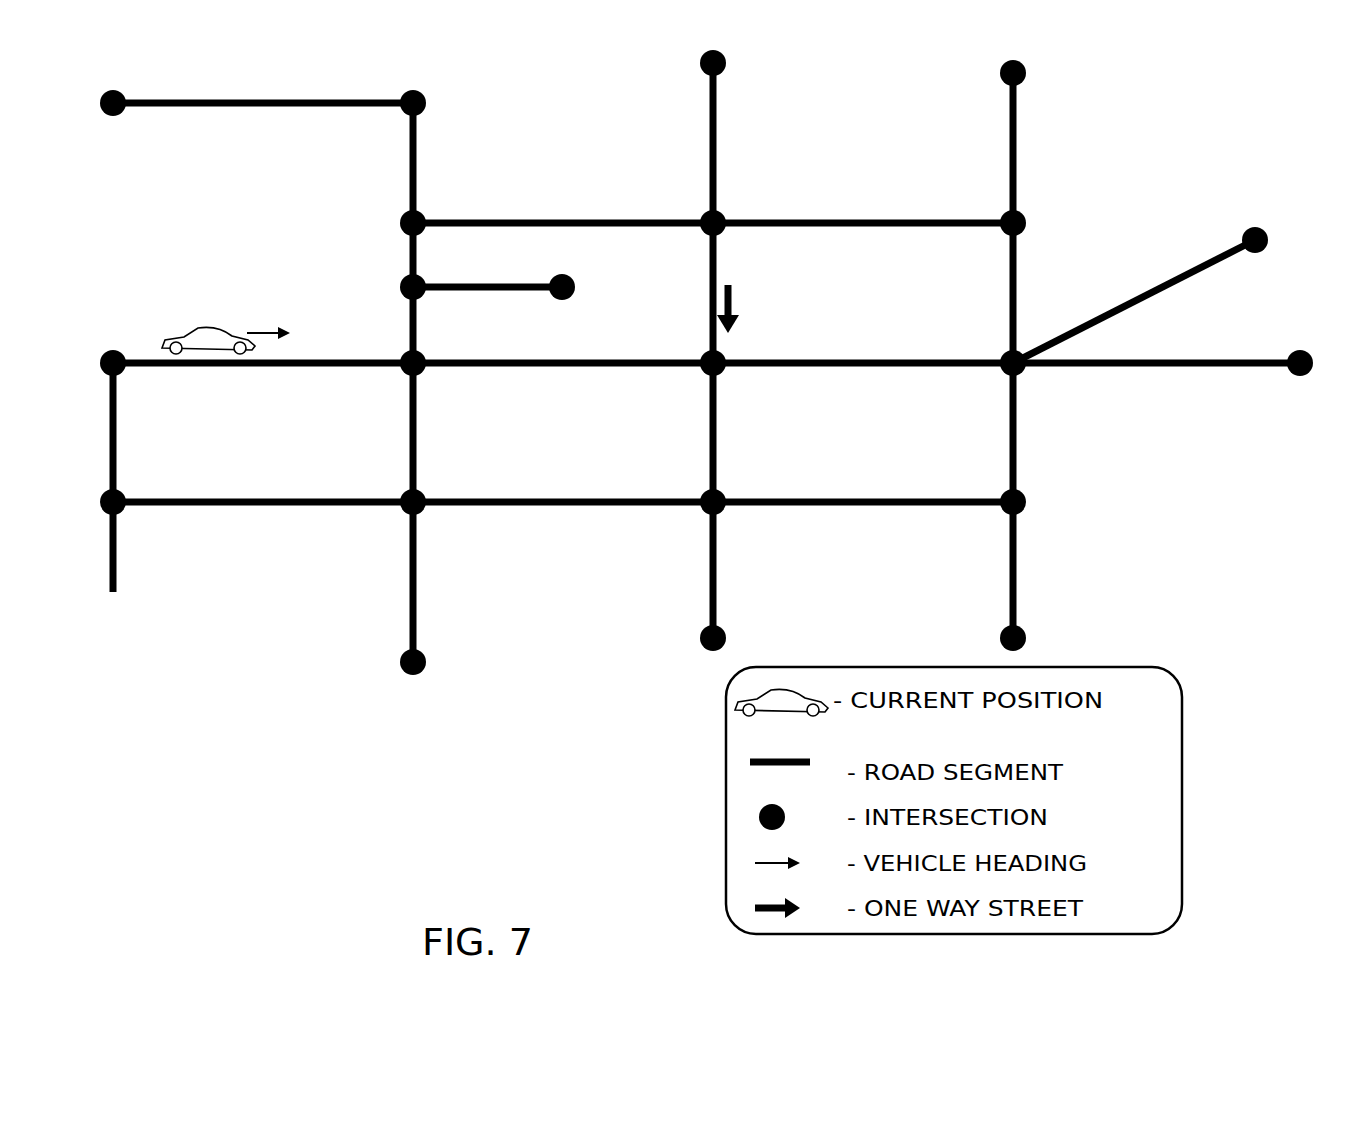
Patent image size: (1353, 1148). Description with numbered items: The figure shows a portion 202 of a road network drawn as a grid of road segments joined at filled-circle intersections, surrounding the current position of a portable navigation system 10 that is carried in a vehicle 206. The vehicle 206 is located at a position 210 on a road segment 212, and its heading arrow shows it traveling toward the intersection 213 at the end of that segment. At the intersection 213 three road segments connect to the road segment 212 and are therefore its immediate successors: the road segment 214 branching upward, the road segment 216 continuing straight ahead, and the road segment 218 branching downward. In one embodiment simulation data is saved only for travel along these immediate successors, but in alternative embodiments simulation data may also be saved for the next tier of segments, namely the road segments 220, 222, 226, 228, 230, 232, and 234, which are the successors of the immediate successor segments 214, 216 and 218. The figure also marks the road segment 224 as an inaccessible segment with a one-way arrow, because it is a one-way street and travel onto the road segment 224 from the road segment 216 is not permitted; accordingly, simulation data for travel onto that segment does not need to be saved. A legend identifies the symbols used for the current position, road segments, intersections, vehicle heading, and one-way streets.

The portion of a road network 202 is at (527, 112).
The vehicle 206 is at (223, 327).
The position 210 is at (203, 390).
The portable navigation system 10 is at (234, 419).
The road segment 212 is at (323, 350).
The intersection 213 is at (427, 382).
The road segment 214 is at (403, 318).
The road segment 216 is at (660, 337).
The road segment 218 is at (397, 453).
The road segment 220 is at (403, 258).
The road segment 222 is at (533, 265).
The road segment 224 is at (740, 280).
The road segment 226 is at (905, 337).
The road segment 228 is at (697, 472).
The road segment 230 is at (585, 492).
The road segment 232 is at (432, 568).
The road segment 234 is at (323, 487).